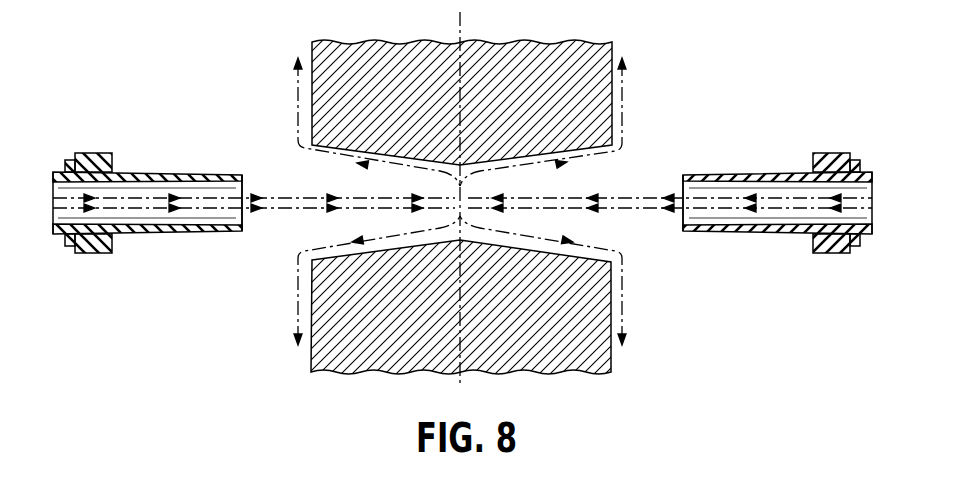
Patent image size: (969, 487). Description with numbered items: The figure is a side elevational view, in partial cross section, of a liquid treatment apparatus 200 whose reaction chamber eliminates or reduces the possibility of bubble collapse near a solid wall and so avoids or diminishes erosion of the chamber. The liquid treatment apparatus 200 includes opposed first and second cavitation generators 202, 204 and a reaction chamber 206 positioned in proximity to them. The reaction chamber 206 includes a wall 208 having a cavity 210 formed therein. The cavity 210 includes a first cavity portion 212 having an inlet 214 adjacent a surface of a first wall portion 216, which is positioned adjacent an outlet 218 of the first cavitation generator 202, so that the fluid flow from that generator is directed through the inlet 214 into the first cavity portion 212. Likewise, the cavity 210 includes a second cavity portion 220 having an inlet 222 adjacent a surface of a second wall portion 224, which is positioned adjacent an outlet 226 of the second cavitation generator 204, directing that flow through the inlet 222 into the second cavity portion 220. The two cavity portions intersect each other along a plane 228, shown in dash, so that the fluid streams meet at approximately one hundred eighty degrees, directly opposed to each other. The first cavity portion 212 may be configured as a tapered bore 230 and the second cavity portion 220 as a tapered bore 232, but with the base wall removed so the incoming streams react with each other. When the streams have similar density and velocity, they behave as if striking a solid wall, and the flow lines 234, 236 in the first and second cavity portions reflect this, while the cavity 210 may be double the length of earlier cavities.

The liquid treatment apparatus 200 is at (187, 76).
The first cavitation generator 202 is at (106, 146).
The second cavitation generator 204 is at (786, 146).
The reaction chamber 206 is at (531, 40).
The wall 208 is at (362, 42).
The cavity 210 is at (610, 228).
The first cavity portion 212 is at (308, 255).
The inlet 214 is at (298, 146).
The first wall portion 216 is at (298, 88).
The outlet 218 is at (245, 178).
The second cavity portion 220 is at (614, 245).
The inlet 222 is at (622, 150).
The second wall portion 224 is at (620, 44).
The outlet 226 is at (679, 196).
The plane 228 is at (458, 26).
The tapered bore 230 is at (461, 307).
The tapered bore 232 is at (543, 280).
The flow lines 234 is at (305, 212).
The flow lines 236 is at (612, 196).